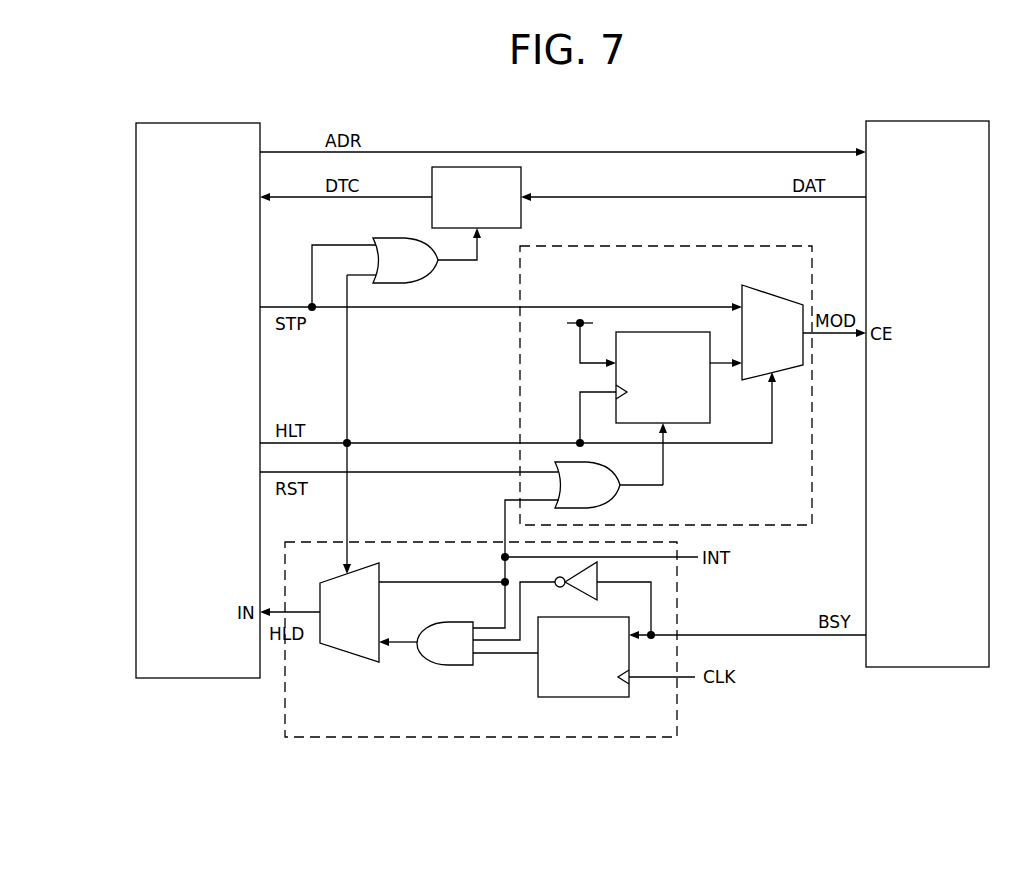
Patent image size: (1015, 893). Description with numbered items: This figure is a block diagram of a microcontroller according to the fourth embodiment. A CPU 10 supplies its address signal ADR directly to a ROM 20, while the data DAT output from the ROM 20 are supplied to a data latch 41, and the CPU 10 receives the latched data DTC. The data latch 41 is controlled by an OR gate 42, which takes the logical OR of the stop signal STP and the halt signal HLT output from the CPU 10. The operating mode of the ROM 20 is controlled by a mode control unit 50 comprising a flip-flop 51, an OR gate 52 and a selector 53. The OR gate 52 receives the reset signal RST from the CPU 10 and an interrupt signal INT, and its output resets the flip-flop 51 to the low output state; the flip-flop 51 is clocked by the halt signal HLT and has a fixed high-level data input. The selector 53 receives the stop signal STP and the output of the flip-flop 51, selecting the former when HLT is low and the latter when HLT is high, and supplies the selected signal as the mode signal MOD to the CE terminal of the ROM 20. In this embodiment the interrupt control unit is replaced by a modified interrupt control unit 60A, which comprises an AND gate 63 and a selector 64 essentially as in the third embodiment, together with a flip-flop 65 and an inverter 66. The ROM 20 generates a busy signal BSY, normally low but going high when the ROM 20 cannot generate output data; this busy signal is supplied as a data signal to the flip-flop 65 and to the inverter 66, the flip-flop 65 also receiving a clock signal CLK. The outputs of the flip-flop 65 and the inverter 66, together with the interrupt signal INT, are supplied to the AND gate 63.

The CPU 10 is at (198, 123).
The ROM 20 is at (925, 121).
The data latch 41 is at (474, 167).
The OR gate 42 is at (385, 239).
The mode control unit 50 is at (681, 244).
The flip-flop 51 is at (616, 375).
The OR gate 52 is at (607, 500).
The selector 53 is at (767, 291).
The modified interrupt control unit 60A is at (404, 540).
The AND gate 63 is at (447, 664).
The selector 64 is at (353, 654).
The flip-flop 65 is at (568, 698).
The inverter 66 is at (598, 588).